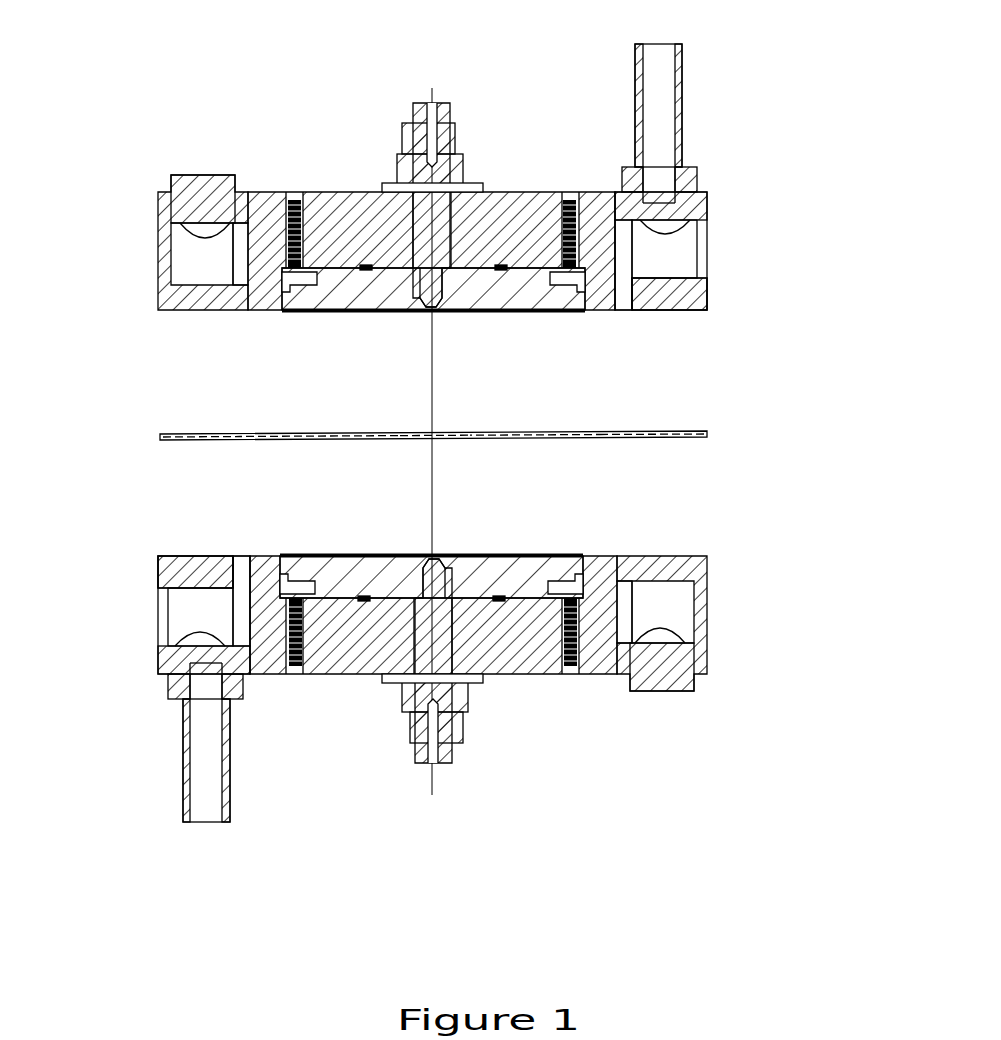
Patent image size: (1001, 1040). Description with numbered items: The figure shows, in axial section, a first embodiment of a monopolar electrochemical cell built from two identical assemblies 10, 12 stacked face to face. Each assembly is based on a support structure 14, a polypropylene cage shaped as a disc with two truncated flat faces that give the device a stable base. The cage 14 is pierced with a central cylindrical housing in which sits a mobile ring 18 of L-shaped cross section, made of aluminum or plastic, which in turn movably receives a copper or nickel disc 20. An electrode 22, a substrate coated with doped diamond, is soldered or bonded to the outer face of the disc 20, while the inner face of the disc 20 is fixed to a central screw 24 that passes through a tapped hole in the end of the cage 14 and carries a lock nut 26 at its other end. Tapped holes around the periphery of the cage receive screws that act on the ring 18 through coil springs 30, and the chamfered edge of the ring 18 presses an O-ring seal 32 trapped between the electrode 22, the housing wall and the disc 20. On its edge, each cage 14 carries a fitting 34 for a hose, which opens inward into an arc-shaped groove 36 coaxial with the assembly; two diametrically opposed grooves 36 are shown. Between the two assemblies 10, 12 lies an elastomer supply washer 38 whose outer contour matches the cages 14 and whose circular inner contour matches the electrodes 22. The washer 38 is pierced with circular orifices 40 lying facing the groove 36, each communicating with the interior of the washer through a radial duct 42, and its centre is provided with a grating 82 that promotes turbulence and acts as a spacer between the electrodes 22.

The assembly 10 is at (140, 599).
The assembly 12 is at (150, 160).
The support structure 14 is at (498, 414).
The mobile ring 18 is at (330, 433).
The disc 20 is at (432, 433).
The electrode 22 is at (450, 434).
The central screw 24 is at (435, 450).
The lock nut 26 is at (545, 449).
The coil spring 30 is at (495, 452).
The O-ring seal 32 is at (496, 433).
The fitting 34 is at (433, 414).
The groove 36 is at (433, 351).
The supply washer 38 is at (433, 419).
The circular orifices 40 is at (469, 411).
The radial duct 42 is at (466, 410).
The grating 82 is at (470, 410).